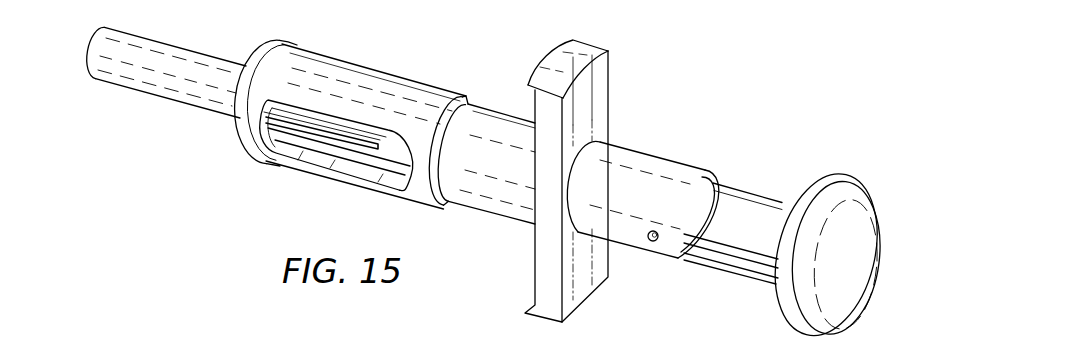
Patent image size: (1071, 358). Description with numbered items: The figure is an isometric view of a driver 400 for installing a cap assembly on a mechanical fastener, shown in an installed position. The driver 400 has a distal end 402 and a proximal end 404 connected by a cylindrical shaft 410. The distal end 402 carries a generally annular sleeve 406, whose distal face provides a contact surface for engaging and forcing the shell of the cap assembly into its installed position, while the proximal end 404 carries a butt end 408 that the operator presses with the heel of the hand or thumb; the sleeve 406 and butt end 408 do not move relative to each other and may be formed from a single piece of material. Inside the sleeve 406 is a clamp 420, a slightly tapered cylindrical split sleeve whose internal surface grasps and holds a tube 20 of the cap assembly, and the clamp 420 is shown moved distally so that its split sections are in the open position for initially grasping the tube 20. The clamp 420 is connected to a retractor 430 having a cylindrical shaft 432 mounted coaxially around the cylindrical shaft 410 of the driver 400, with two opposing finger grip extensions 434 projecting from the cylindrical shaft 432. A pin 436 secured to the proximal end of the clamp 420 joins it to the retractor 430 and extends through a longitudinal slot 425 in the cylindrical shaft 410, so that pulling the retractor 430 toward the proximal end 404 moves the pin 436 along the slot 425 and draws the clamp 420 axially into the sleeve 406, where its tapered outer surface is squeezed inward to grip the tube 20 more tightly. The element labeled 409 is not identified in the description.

The tube 20 is at (173, 68).
The driver 400 is at (741, 112).
The distal end 402 is at (210, 133).
The proximal end 404 is at (884, 210).
The sleeve 406 is at (373, 82).
The butt end 408 is at (843, 288).
The inner shaft 409 is at (350, 158).
The cylindrical shaft 410 is at (746, 197).
The clamp 420 is at (389, 149).
The longitudinal slot 425 is at (752, 258).
The retractor 430 is at (645, 167).
The cylindrical shaft 432 is at (492, 200).
The finger grip extension 434 is at (602, 73).
The pin 436 is at (651, 241).